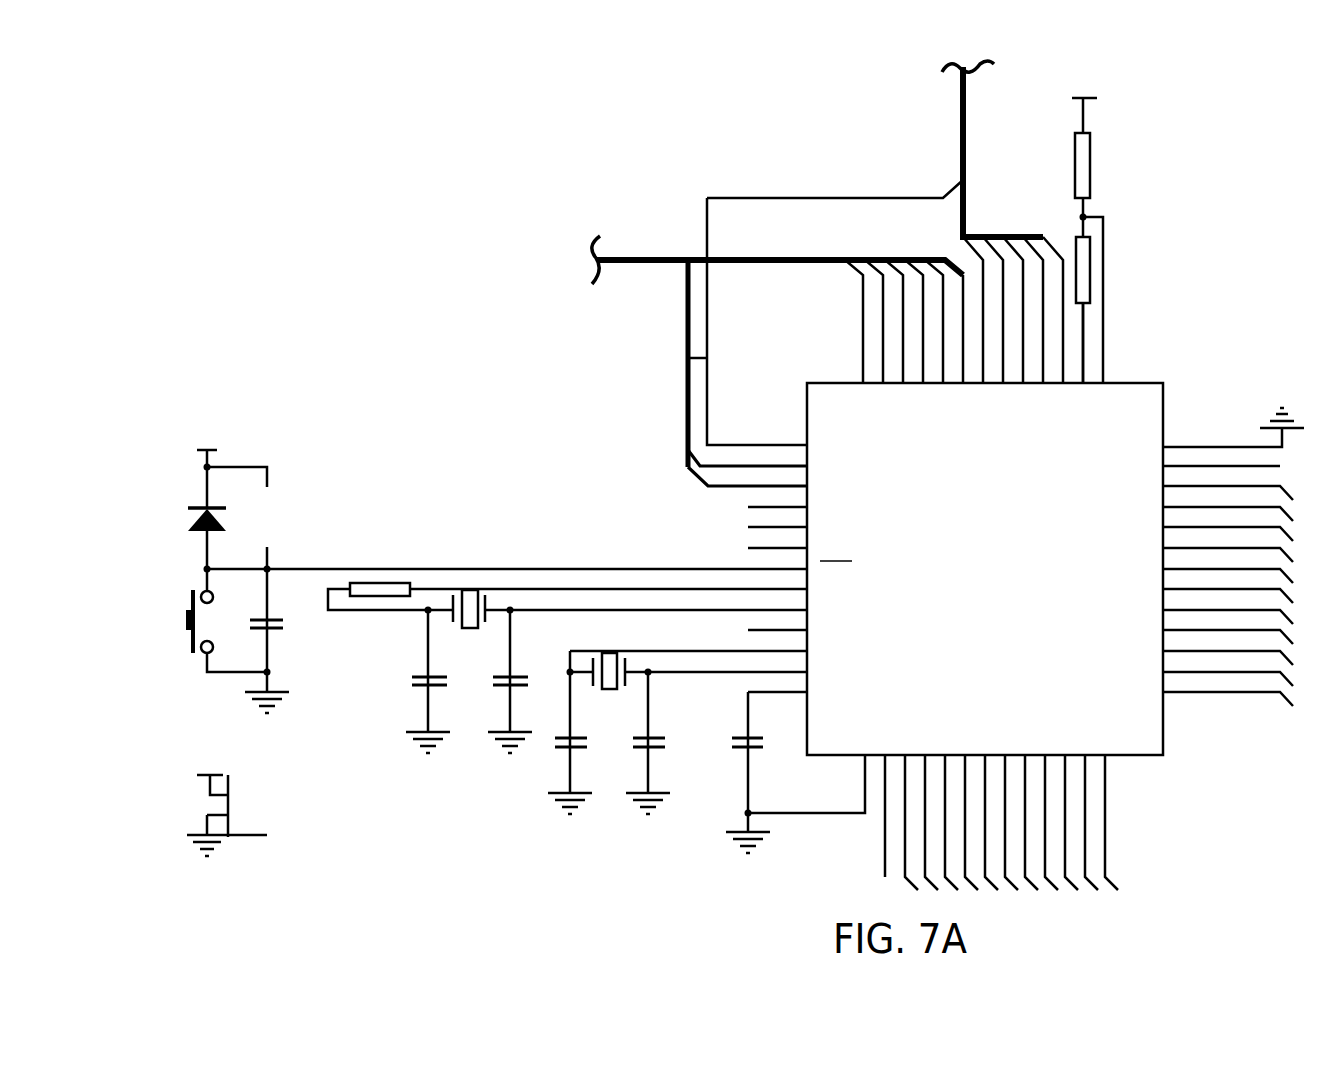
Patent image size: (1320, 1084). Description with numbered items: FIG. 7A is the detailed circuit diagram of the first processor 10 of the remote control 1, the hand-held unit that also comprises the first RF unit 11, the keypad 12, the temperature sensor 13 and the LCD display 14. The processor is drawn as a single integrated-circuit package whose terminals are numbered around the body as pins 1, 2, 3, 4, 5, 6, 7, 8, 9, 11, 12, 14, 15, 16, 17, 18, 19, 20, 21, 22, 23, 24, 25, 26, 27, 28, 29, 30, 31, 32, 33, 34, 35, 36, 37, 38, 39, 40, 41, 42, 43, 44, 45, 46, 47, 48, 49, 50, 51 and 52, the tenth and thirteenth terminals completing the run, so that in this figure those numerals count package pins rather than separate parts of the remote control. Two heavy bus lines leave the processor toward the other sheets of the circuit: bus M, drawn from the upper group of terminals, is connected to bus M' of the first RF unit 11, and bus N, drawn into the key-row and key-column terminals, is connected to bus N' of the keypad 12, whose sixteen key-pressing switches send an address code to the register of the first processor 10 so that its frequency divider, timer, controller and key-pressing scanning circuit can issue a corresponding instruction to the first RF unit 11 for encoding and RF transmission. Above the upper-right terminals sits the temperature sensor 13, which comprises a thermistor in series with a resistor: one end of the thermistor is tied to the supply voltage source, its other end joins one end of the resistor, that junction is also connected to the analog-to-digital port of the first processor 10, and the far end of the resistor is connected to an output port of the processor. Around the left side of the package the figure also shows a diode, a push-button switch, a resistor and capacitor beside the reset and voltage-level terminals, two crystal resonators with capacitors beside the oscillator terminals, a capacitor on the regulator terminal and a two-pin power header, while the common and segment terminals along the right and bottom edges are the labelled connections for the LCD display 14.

The first processor 10 is at (460, 837).
The temperature sensor 13 is at (1192, 126).
The remote control 1 is at (757, 322).
The retransmission device 2 is at (747, 457).
The receiver 3 is at (747, 477).
The microcontroller pin 4 (VLC2) 4 is at (777, 498).
The microcontroller pin 5 (VLC1) 5 is at (777, 518).
The microcontroller pin 6 (VLC0) 6 is at (777, 539).
The microcontroller pin 7 (RES) 7 is at (507, 560).
The microcontroller pin 8 (XT2) 8 is at (608, 580).
The microcontroller pin 9 (XT1) 9 is at (646, 601).
The first RF unit 11 is at (688, 642).
The keypad 12 is at (727, 663).
The LCD display 14 is at (807, 784).
The microcontroller pin 15 (VDD) 15 is at (878, 816).
The microcontroller pin 16 (SEG17) 16 is at (903, 822).
The microcontroller pin 17 (SEG16) 17 is at (923, 822).
The microcontroller pin 18 (SEG15) 18 is at (943, 822).
The microcontroller pin 19 (SEG14) 19 is at (963, 822).
The third processor 20 is at (983, 822).
The second RF unit 21 is at (1003, 822).
The IR unit 22 is at (1023, 822).
The microcontroller pin 23 (SEG10) 23 is at (1043, 822).
The microcontroller pin 24 (SEG9) 24 is at (1063, 822).
The microcontroller pin 25 (SEG8) 25 is at (1083, 822).
The microcontroller pin 26 (SEG7) 26 is at (1103, 822).
The microcontroller pin 27 (SEG6) 27 is at (1228, 690).
The microcontroller pin 28 (SEG5) 28 is at (1228, 670).
The microcontroller pin 29 (SEG4) 29 is at (1228, 649).
The second processor 30 is at (1228, 628).
The IR receiver 31 is at (1228, 608).
The microcontroller pin 32 (SEG1) 32 is at (1228, 587).
The microcontroller pin 33 (SEG0) 33 is at (1228, 567).
The microcontroller pin 34 (COM3) 34 is at (1228, 546).
The microcontroller pin 35 (COM2) 35 is at (1228, 525).
The microcontroller pin 36 (COM1) 36 is at (1228, 505).
The microcontroller pin 37 (COM0) 37 is at (1228, 484).
The microcontroller pin 38 (AVref/VDD) 38 is at (1221, 457).
The microcontroller pin 39 (AVss) 39 is at (1233, 428).
The microcontroller pin 40 (P25/AI5) 40 is at (1094, 300).
The microcontroller pin 41 (P24/AI4) 41 is at (1077, 343).
The microcontroller pin 42 (CE) 42 is at (1054, 310).
The microcontroller pin 43 (CSN) 43 is at (1034, 310).
The microcontroller pin 44 (SCK) 44 is at (1014, 310).
The microcontroller pin 45 (MOSI) 45 is at (994, 310).
The microcontroller pin 46 (MISO) 46 is at (974, 310).
The microcontroller pin 47 (COL3) 47 is at (957, 329).
The microcontroller pin 48 (COL2) 48 is at (935, 321).
The microcontroller pin 49 (COL1) 49 is at (915, 321).
The microcontroller pin 50 (COL0) 50 is at (895, 321).
The microcontroller pin 51 (KR3) 51 is at (875, 321).
The microcontroller pin 52 (KR2) 52 is at (855, 321).